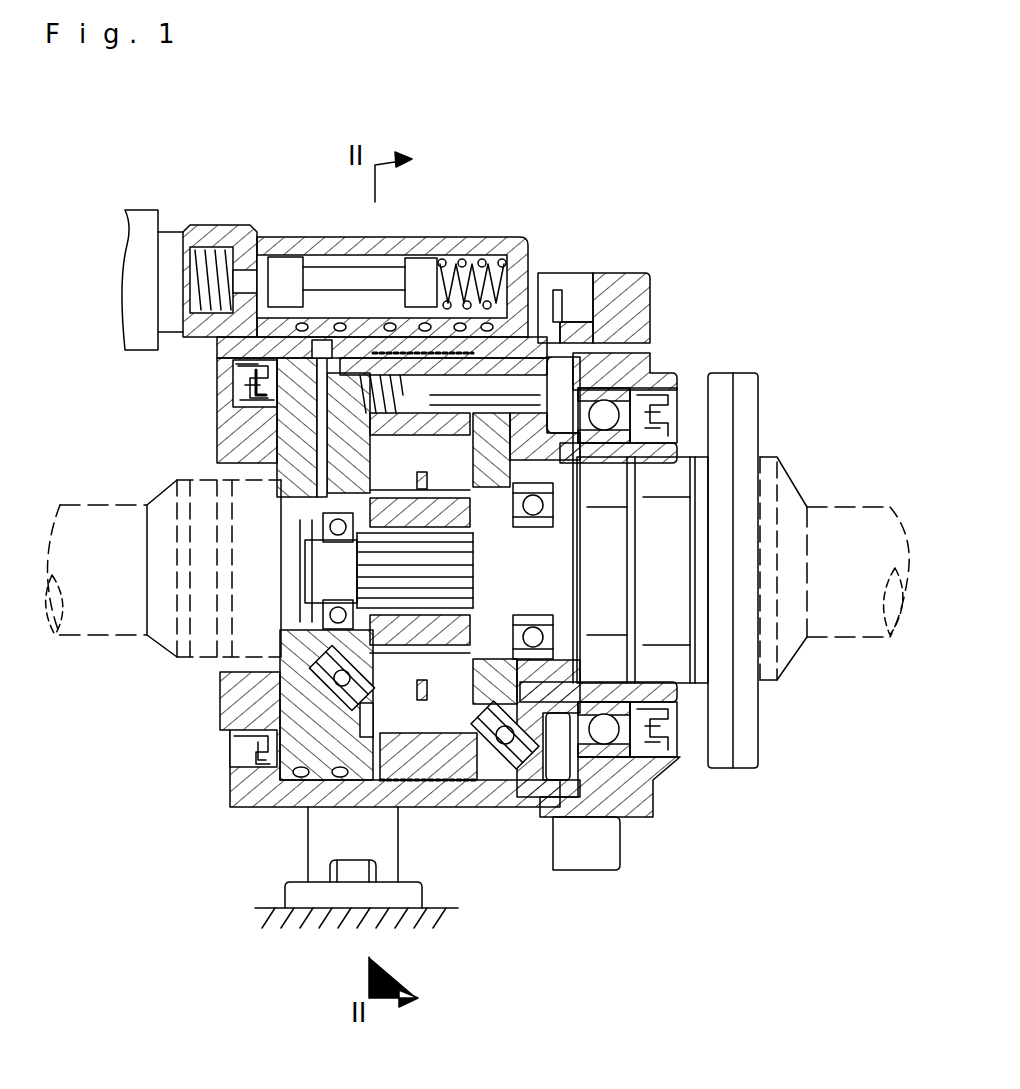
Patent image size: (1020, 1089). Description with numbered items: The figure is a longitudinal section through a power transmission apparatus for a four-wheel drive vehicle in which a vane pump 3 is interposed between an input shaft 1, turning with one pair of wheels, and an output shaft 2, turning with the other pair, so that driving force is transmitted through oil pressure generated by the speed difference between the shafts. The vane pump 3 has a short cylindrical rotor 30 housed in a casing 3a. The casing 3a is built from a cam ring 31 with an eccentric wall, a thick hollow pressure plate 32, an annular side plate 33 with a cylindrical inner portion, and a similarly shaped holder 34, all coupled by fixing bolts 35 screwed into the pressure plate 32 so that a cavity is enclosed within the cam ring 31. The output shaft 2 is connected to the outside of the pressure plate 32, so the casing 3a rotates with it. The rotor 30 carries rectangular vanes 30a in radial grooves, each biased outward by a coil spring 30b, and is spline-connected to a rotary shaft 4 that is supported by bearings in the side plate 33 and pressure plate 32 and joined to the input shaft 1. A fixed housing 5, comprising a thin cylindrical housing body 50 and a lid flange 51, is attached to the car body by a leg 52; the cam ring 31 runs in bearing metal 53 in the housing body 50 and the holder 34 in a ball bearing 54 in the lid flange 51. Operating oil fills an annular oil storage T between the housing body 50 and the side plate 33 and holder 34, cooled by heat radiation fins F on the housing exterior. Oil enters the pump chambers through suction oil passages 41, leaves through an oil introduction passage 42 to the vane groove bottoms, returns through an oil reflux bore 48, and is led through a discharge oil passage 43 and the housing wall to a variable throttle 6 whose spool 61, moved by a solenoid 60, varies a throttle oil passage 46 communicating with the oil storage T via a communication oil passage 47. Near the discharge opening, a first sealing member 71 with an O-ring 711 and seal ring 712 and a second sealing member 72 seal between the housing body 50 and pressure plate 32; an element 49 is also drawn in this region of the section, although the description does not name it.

The input shaft 1 is at (833, 507).
The output shaft 2 is at (110, 505).
The vane pump 3 is at (203, 672).
The casing 3a is at (470, 807).
The rotor 30 is at (300, 640).
The vane 30a is at (330, 800).
The coil spring 30b is at (365, 715).
The cam ring 31 is at (413, 780).
The pressure plate 32 is at (313, 813).
The side plate 33 is at (487, 790).
The holder 34 is at (525, 780).
The fixing bolts 35 is at (600, 388).
The rotary shaft 4 is at (683, 468).
The suction oil passages 41 is at (552, 757).
The oil introduction passage 42 is at (265, 745).
The discharge oil passage 43 is at (305, 430).
The throttle oil passage 46 is at (425, 305).
The communication oil passage 47 is at (483, 262).
The oil reflux bore 48 is at (322, 513).
The bolt 49 is at (317, 450).
The fixed housing 5 is at (620, 255).
The housing body 50 is at (573, 323).
The lid flange 51 is at (655, 303).
The leg 52 is at (317, 867).
The bearing metal 53 is at (383, 347).
The ball bearing 54 is at (680, 373).
The variable throttle 6 is at (262, 205).
The solenoid 60 is at (137, 211).
The spool 61 is at (381, 262).
The first sealing member 71 is at (232, 373).
The O-ring 711 is at (234, 360).
The seal ring 712 is at (268, 317).
The second sealing member 72 is at (233, 403).
The heat radiation fins F is at (570, 322).
The oil storage T is at (557, 357).